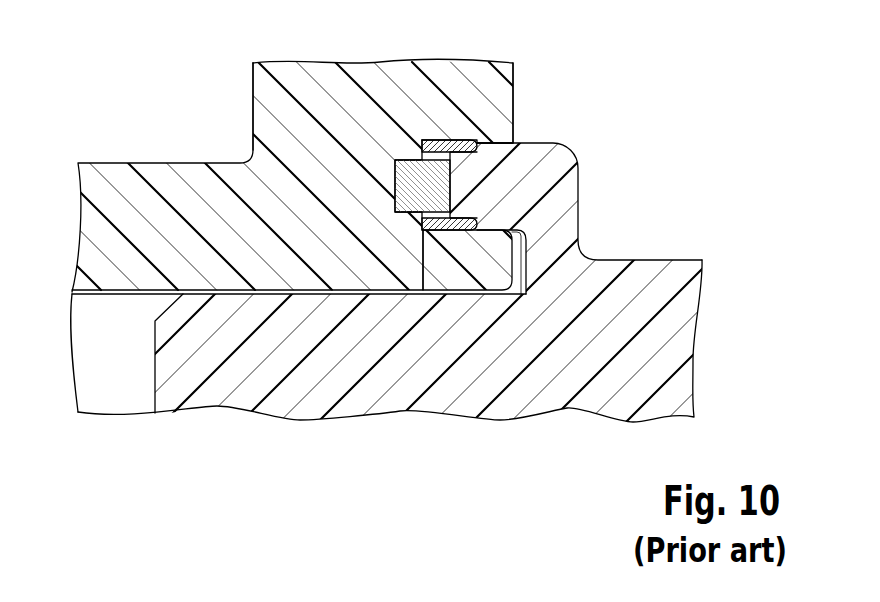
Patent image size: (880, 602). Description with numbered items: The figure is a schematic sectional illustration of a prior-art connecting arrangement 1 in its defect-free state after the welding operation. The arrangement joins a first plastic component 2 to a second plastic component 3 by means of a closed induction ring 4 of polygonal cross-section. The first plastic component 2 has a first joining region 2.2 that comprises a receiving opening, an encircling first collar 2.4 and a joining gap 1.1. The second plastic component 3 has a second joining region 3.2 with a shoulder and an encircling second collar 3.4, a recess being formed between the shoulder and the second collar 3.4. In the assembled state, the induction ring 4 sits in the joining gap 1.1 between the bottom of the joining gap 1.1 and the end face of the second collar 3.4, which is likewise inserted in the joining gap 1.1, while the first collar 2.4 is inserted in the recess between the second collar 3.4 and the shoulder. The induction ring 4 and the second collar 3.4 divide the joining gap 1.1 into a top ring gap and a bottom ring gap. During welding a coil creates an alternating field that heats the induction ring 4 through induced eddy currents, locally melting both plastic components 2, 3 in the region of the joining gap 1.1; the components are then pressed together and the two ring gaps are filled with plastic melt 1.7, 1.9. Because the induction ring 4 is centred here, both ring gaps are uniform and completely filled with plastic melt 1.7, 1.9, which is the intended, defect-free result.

The connecting arrangement 1 is at (408, 108).
The joining gap 1.1 is at (481, 112).
The plastic melt 1.7 is at (447, 147).
The plastic melt 1.9 is at (428, 232).
The first plastic component 2 is at (103, 219).
The first joining region 2.2 is at (385, 105).
The first collar 2.4 is at (488, 267).
The second plastic component 3 is at (677, 337).
The second joining region 3.2 is at (549, 246).
The second collar 3.4 is at (458, 182).
The induction ring 4 is at (413, 183).